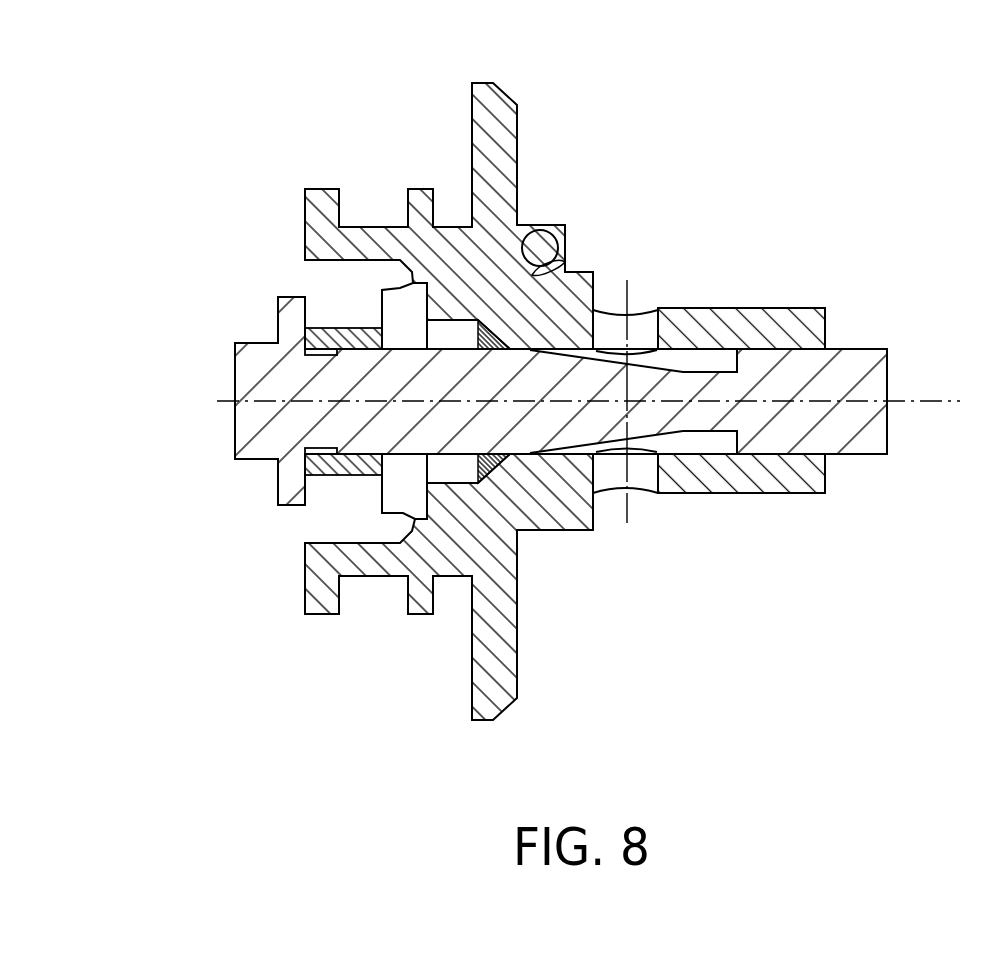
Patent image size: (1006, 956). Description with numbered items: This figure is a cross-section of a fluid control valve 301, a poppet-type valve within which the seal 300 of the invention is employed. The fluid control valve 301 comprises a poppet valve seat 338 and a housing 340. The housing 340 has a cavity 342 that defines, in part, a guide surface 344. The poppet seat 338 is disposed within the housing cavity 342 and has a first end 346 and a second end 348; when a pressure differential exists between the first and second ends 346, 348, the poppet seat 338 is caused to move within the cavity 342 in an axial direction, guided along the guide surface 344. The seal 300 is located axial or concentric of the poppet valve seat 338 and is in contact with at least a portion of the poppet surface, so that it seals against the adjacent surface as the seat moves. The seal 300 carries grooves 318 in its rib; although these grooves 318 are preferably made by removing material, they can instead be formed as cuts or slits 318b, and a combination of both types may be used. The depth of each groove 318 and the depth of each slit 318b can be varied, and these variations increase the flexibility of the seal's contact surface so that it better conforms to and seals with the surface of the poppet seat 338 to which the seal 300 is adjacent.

The fluid control valve 301 is at (558, 373).
The seal 300 is at (548, 495).
The grooves 318 is at (512, 333).
The cuts or slits 318b is at (494, 401).
The poppet valve seat 338 is at (462, 437).
The housing 340 is at (777, 495).
The cavity 342 is at (648, 353).
The guide surface 344 is at (690, 455).
The first end 346 is at (888, 383).
The second end 348 is at (236, 423).